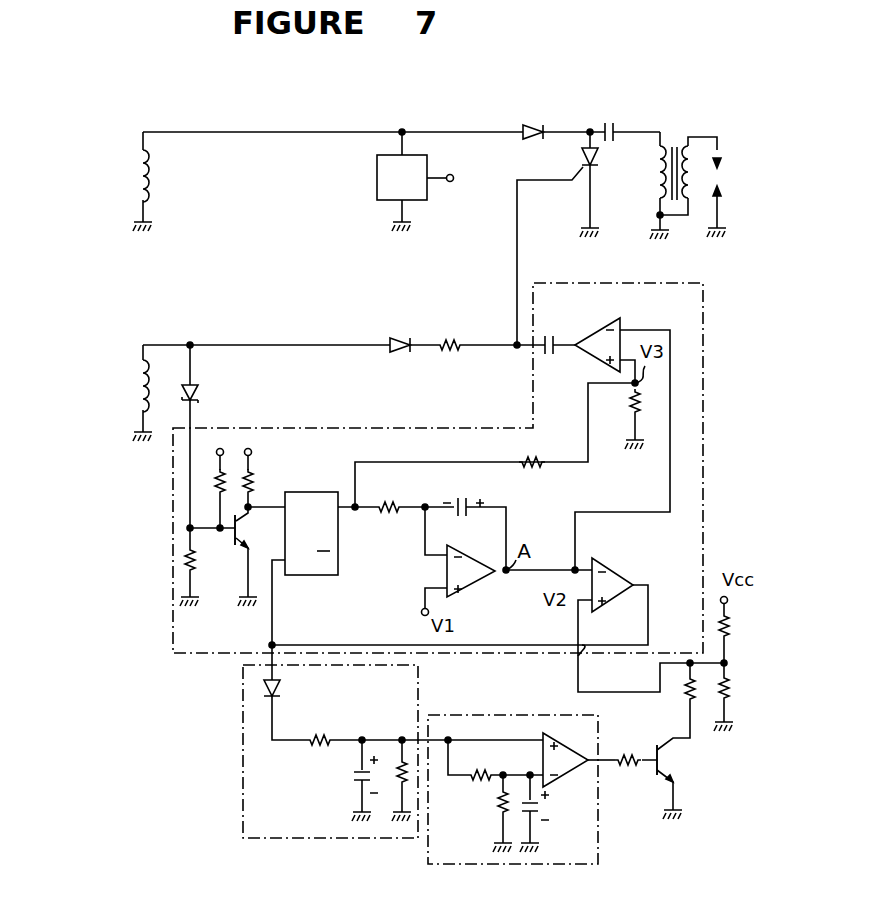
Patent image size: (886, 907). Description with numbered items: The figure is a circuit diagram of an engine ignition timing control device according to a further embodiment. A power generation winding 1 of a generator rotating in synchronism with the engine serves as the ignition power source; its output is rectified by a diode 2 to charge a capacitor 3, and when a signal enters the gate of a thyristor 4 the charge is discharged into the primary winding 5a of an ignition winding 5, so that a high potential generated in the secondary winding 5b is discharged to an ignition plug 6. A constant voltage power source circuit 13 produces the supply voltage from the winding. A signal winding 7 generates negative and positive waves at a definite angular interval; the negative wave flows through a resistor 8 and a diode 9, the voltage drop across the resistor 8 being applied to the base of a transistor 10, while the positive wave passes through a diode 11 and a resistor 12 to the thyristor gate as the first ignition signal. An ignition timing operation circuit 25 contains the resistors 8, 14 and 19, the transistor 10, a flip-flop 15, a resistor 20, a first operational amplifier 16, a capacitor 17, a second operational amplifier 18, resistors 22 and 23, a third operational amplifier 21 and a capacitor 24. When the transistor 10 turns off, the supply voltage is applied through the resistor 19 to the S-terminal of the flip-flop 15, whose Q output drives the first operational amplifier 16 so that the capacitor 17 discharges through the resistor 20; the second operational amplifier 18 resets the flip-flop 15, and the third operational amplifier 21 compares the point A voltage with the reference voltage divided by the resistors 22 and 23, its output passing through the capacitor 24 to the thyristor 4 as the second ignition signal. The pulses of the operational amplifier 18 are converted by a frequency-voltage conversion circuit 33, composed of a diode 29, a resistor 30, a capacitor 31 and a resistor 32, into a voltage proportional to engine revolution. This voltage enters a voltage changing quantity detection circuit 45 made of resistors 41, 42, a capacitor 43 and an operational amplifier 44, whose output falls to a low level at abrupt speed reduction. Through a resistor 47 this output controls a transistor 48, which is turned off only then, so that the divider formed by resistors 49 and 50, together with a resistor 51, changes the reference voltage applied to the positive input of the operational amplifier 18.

The power generation winding 1 is at (138, 183).
The diode 2 is at (531, 127).
The capacitor 3 is at (609, 123).
The thyristor 4 is at (599, 170).
The ignition winding 5 is at (665, 146).
The primary winding 5a is at (656, 172).
The secondary winding 5b is at (694, 160).
The ignition plug 6 is at (720, 180).
The signal winding 7 is at (138, 385).
The resistor 8 is at (185, 560).
The diode 9 is at (198, 400).
The transistor 10 is at (245, 552).
The diode 11 is at (399, 337).
The resistor 12 is at (456, 337).
The constant voltage power source circuit 13 is at (377, 181).
The resistor 14 is at (215, 489).
The flip-flop 15 is at (306, 492).
The first operational amplifier 16 is at (478, 568).
The capacitor 17 is at (460, 498).
The second operational amplifier 18 is at (600, 574).
The resistor 19 is at (254, 476).
The resistor 20 is at (390, 505).
The third operational amplifier 21 is at (624, 321).
The resistor 22 is at (540, 467).
The resistor 23 is at (646, 400).
The capacitor 24 is at (549, 336).
The ignition timing operation circuit 25 is at (641, 283).
The diode 29 is at (278, 690).
The resistor 30 is at (322, 737).
The capacitor 31 is at (354, 777).
The resistor 32 is at (396, 770).
The frequency-voltage conversion circuit 33 is at (243, 762).
The resistor 41 is at (487, 768).
The resistor 42 is at (498, 805).
The capacitor 43 is at (545, 810).
The operational amplifier 44 is at (565, 775).
The voltage changing quantity detection circuit 45 is at (598, 826).
The resistor 47 is at (634, 767).
The transistor 48 is at (689, 762).
The resistor 49 is at (686, 690).
The resistor 50 is at (729, 632).
The resistor 51 is at (729, 685).